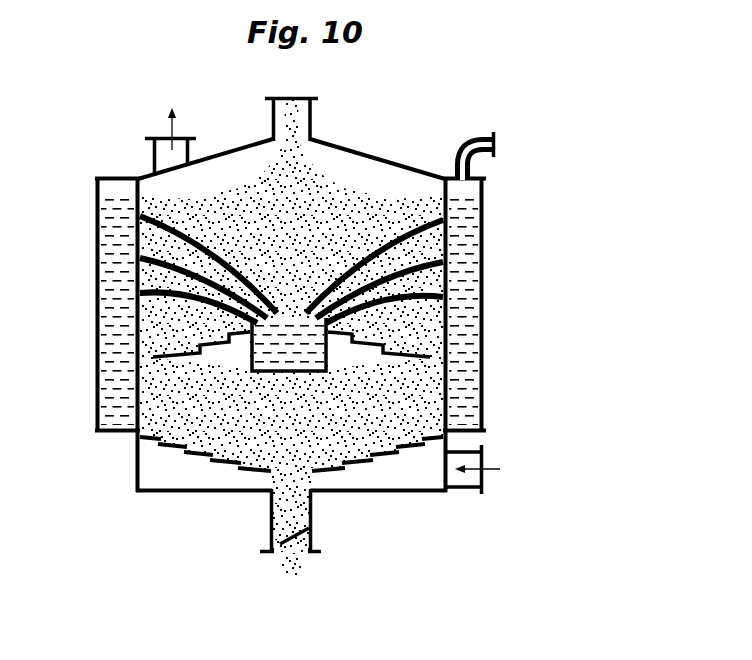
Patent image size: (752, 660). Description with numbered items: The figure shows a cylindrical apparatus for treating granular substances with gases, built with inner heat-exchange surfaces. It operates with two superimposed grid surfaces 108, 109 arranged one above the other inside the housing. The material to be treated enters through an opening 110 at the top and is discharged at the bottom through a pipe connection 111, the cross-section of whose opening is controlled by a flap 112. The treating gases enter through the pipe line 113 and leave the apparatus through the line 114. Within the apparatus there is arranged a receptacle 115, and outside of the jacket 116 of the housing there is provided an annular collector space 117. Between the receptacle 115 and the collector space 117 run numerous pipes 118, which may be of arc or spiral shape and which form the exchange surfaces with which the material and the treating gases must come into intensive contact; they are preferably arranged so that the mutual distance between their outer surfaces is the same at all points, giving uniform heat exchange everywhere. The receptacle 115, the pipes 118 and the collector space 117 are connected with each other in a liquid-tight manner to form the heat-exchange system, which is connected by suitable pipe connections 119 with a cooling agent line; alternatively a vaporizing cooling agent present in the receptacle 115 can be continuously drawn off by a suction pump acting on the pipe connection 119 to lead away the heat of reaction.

The grid surface 108 is at (377, 345).
The grid surface 109 is at (380, 455).
The opening 110 is at (304, 119).
The pipe connection 111 is at (313, 539).
The flap 112 is at (287, 540).
The pipe line 113 is at (478, 461).
The line 114 is at (162, 150).
The receptacle 115 is at (292, 353).
The jacket 116 is at (447, 320).
The annular collector space 117 is at (113, 230).
The pipes 118 is at (173, 268).
The pipe connections 119 is at (495, 147).